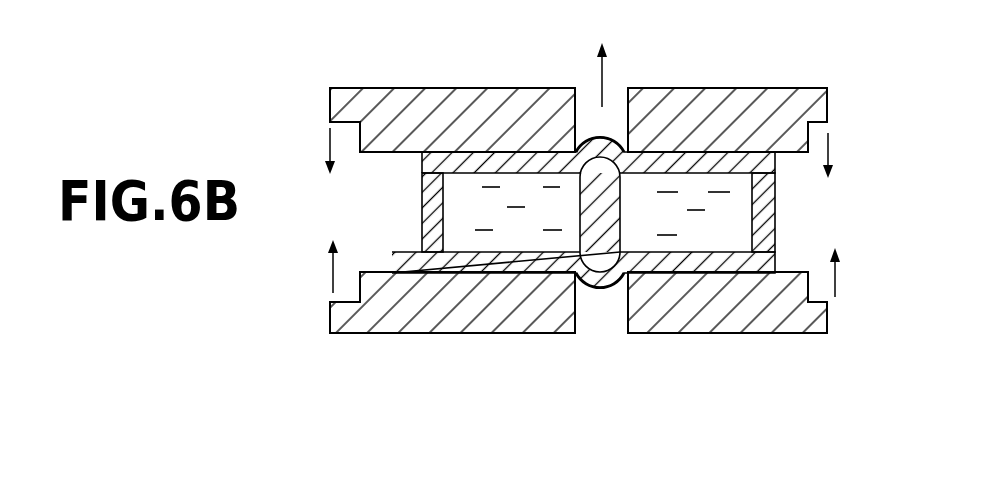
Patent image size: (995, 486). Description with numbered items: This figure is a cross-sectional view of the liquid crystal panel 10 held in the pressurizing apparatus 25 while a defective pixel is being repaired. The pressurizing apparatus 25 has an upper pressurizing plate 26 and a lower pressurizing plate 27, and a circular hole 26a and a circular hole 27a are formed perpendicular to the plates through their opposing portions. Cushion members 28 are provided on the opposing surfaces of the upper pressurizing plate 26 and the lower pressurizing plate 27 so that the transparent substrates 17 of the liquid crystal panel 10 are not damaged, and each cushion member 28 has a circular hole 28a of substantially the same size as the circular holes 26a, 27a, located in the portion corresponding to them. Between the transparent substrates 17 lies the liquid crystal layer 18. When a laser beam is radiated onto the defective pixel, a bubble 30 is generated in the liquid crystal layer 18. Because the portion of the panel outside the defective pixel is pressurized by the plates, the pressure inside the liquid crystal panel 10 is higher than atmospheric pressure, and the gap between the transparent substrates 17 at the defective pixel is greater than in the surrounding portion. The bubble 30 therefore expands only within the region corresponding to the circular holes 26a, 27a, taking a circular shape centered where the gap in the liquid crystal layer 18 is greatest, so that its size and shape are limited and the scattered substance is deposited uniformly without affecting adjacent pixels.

The liquid crystal panel 10 is at (418, 213).
The transparent substrate 17 is at (693, 163).
The liquid crystal layer 18 is at (722, 227).
The pressurizing apparatus 25 is at (837, 79).
The upper pressurizing plate 26 is at (453, 102).
The circular hole 26a is at (576, 105).
The lower pressurizing plate 27 is at (428, 333).
The circular hole 27a is at (577, 318).
The cushion member 28 is at (742, 130).
The circular hole 28a is at (617, 123).
The bubble 30 is at (577, 192).